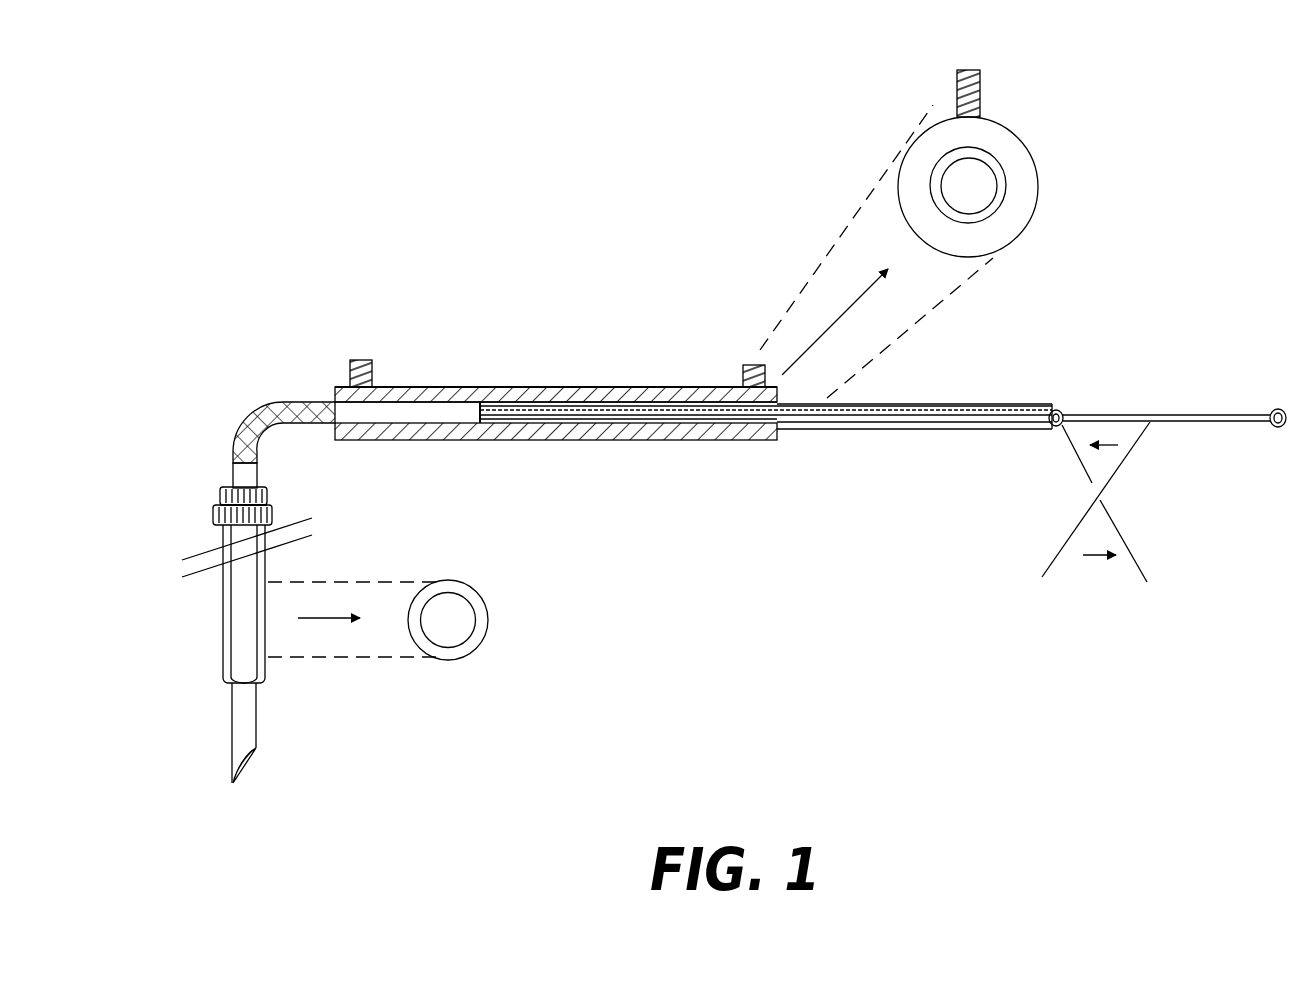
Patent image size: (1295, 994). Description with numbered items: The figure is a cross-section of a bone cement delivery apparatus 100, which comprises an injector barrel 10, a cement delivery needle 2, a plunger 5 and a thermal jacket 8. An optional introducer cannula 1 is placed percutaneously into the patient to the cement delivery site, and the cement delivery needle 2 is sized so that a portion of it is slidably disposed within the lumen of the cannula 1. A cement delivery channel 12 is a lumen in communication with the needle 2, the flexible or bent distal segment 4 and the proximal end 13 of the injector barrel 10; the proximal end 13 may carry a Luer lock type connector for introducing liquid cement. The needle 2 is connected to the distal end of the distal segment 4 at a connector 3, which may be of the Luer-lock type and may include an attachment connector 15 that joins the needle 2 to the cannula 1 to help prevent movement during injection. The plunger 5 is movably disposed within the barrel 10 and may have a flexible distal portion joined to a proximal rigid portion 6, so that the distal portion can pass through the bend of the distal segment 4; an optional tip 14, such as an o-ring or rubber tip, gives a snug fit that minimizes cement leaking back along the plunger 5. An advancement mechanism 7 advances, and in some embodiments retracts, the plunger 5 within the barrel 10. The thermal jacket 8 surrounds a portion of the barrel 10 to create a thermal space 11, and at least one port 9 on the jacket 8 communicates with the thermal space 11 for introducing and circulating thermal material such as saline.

The bone cement delivery apparatus 100 is at (582, 243).
The introducer cannula 1 is at (224, 643).
The cement delivery needle 2 is at (223, 605).
The connector 3 is at (220, 497).
The distal segment 4 is at (237, 422).
The plunger 5 is at (548, 425).
The proximal rigid portion 6 is at (835, 426).
The advancement mechanism 7 is at (1100, 500).
The thermal jacket 8 is at (637, 441).
The port 9 is at (357, 360).
The injector barrel 10 is at (950, 431).
The thermal space 11 is at (440, 387).
The cement delivery channel 12 is at (458, 395).
The proximal end 13 is at (1059, 411).
The tip 14 is at (485, 387).
The attachment connector 15 is at (267, 507).